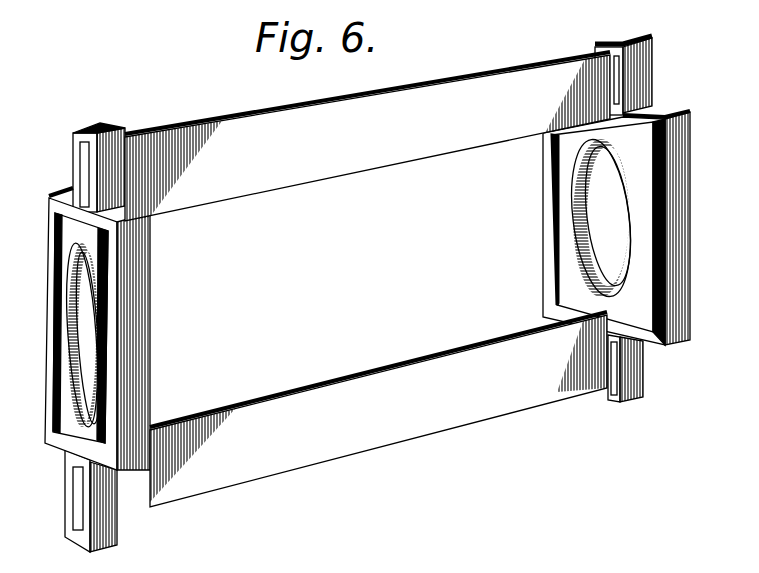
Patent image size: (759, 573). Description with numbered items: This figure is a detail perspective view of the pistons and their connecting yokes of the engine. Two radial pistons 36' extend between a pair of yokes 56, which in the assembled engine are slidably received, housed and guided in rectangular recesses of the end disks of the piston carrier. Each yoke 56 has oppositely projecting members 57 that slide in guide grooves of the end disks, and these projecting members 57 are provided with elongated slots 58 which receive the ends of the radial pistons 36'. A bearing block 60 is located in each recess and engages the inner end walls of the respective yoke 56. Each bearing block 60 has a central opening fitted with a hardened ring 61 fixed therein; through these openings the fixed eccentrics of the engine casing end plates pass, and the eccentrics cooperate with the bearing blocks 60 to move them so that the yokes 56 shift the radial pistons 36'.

The radial piston 36' is at (367, 279).
The yoke 56 is at (50, 247).
The projecting member 57 is at (72, 163).
The elongated slot 58 is at (78, 148).
The bearing block 60 is at (67, 423).
The hardened ring 61 is at (77, 370).